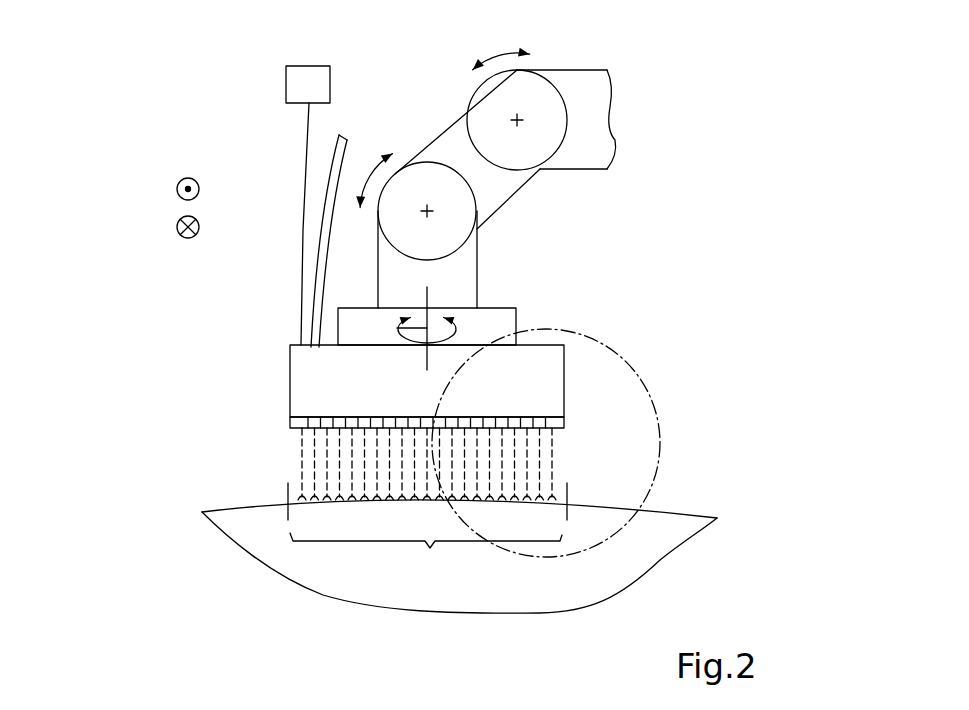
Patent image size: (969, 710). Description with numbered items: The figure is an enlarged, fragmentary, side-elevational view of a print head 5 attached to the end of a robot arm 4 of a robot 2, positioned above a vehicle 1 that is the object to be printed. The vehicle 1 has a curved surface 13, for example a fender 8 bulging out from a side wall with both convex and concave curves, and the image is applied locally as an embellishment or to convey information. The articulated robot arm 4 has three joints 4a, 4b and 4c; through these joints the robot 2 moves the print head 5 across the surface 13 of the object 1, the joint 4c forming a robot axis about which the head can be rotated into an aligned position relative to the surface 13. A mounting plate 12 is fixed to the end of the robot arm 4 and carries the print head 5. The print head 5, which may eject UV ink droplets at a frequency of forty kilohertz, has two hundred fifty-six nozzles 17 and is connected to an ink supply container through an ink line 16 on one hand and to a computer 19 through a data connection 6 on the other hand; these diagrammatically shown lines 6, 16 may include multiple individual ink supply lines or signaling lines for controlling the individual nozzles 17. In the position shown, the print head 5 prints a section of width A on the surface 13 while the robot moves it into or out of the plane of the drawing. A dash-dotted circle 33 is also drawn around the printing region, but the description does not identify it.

The vehicle 1 is at (588, 597).
The robot 2 is at (186, 96).
The robot arm 4 is at (458, 143).
The joint 4a is at (523, 117).
The joint 4b is at (427, 210).
The joint 4c is at (397, 328).
The print head 5 is at (312, 373).
The data connection 6 is at (303, 198).
The fender 8 is at (567, 513).
The mounting plate 12 is at (372, 318).
The surface 13 is at (677, 512).
The ink line 16 is at (317, 228).
The nozzles 17 is at (176, 190).
The computer 19 is at (303, 82).
The working area circle 33 is at (608, 347).